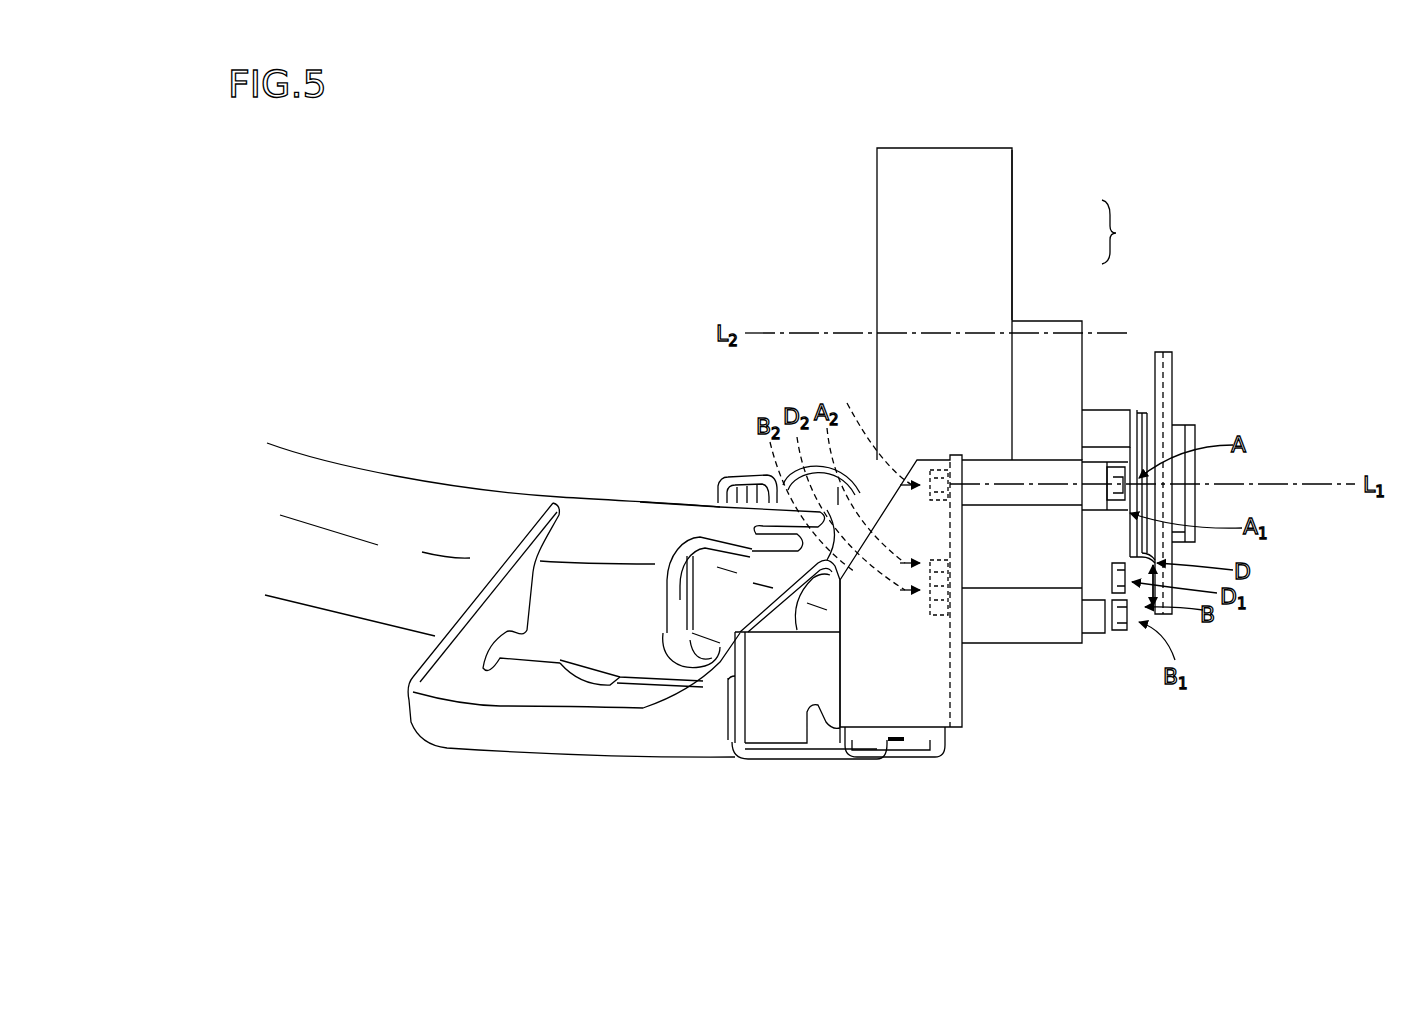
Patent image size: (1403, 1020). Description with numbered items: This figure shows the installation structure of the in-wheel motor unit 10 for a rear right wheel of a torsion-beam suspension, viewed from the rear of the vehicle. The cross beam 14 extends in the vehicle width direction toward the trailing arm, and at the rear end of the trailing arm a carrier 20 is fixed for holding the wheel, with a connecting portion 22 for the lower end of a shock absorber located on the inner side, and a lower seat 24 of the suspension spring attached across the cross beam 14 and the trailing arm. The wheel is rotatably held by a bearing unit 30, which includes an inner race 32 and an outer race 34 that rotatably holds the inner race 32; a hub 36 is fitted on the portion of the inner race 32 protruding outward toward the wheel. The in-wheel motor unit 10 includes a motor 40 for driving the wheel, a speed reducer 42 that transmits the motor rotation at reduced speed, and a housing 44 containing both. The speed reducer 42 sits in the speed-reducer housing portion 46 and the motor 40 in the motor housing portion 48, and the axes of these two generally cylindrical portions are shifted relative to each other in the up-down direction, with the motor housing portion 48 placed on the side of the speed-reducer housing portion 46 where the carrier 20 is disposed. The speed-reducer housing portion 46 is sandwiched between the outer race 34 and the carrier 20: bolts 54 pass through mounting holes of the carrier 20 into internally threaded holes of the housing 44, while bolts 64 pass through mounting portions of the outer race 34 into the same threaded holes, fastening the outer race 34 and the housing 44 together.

The in-wheel motor unit 10 is at (1034, 118).
The cross beam 14 is at (420, 487).
The carrier 20 is at (958, 713).
The connecting portion 22 is at (786, 762).
The lower seat 24 is at (452, 750).
The bearing unit 30 is at (1218, 360).
The inner race 32 is at (1188, 425).
The outer race 34 is at (1112, 417).
The hub 36 is at (1163, 352).
The motor 40 is at (940, 160).
The speed reducer 42 is at (1018, 570).
The housing 44 is at (1125, 232).
The speed-reducer housing portion 46 is at (1037, 330).
The motor housing portion 48 is at (995, 198).
The bolt 54 is at (878, 430).
The bolt 64 is at (1113, 467).